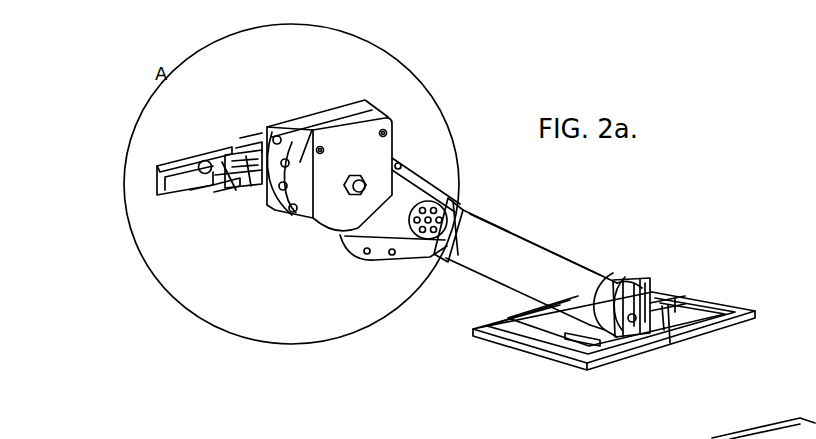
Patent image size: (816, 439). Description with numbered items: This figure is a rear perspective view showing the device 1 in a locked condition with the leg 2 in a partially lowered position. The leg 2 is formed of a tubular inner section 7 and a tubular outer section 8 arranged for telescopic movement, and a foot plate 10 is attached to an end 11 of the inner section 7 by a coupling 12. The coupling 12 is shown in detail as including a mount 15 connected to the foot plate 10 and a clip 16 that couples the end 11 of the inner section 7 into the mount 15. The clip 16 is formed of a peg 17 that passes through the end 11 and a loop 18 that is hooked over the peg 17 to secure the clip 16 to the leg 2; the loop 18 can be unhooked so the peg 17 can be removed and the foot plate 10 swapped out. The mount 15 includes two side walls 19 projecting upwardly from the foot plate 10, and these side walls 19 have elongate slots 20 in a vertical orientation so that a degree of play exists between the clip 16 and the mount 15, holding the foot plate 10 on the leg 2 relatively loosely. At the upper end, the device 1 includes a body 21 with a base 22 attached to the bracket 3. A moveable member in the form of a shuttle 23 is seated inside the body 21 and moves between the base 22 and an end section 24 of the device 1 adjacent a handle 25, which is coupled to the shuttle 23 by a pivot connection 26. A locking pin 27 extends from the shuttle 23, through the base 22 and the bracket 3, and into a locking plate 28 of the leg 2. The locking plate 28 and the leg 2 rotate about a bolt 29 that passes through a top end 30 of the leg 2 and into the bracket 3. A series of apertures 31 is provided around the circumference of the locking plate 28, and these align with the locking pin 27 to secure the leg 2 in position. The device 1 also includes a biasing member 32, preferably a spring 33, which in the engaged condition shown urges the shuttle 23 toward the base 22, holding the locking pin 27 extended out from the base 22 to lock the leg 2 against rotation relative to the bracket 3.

The device 1 is at (238, 147).
The leg 2 is at (503, 232).
The bracket 3 is at (303, 110).
The tubular inner section 7 is at (617, 290).
The tubular outer section 8 is at (480, 280).
The foot plate 10 is at (720, 297).
The end 11 is at (596, 282).
The coupling 12 is at (627, 280).
The mount 15 is at (638, 287).
The clip 16 is at (660, 312).
The peg 17 is at (640, 313).
The loop 18 is at (667, 318).
The side walls 19 is at (607, 283).
The elongate slots 20 is at (587, 360).
The body 21 is at (238, 183).
The base 22 is at (255, 197).
The shuttle 23 is at (250, 180).
The end section 24 is at (213, 183).
The handle 25 is at (213, 152).
The pivot connection 26 is at (255, 137).
The locking pin 27 is at (292, 220).
The locking plate 28 is at (307, 220).
The bolt 29 is at (362, 180).
The top end 30 is at (312, 130).
The apertures 31 is at (263, 195).
The biasing member 32 is at (217, 190).
The spring 33 is at (230, 180).